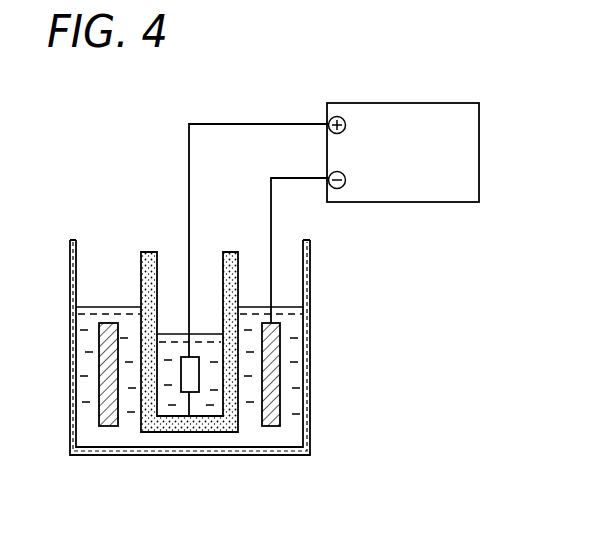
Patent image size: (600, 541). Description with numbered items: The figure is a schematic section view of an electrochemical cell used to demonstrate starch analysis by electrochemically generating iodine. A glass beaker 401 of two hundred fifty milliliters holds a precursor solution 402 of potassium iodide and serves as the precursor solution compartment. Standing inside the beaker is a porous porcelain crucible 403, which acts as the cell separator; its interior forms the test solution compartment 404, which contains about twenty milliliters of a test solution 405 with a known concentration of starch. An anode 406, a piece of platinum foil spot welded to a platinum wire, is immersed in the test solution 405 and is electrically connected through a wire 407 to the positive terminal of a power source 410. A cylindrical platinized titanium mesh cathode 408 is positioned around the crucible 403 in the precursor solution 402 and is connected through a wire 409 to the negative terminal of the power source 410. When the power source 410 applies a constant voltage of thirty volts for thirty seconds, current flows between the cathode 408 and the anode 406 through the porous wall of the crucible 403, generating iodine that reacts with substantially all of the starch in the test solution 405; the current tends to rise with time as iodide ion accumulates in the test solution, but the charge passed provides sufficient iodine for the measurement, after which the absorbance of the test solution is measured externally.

The glass beaker 401 is at (308, 295).
The precursor solution 402 is at (302, 360).
The porous porcelain crucible 403 is at (148, 252).
The test solution compartment 404 is at (157, 268).
The test solution 405 is at (210, 408).
The anode 406 is at (189, 420).
The wire 407 is at (232, 123).
The cathode 408 is at (100, 360).
The wire 409 is at (284, 177).
The power source 410 is at (367, 103).